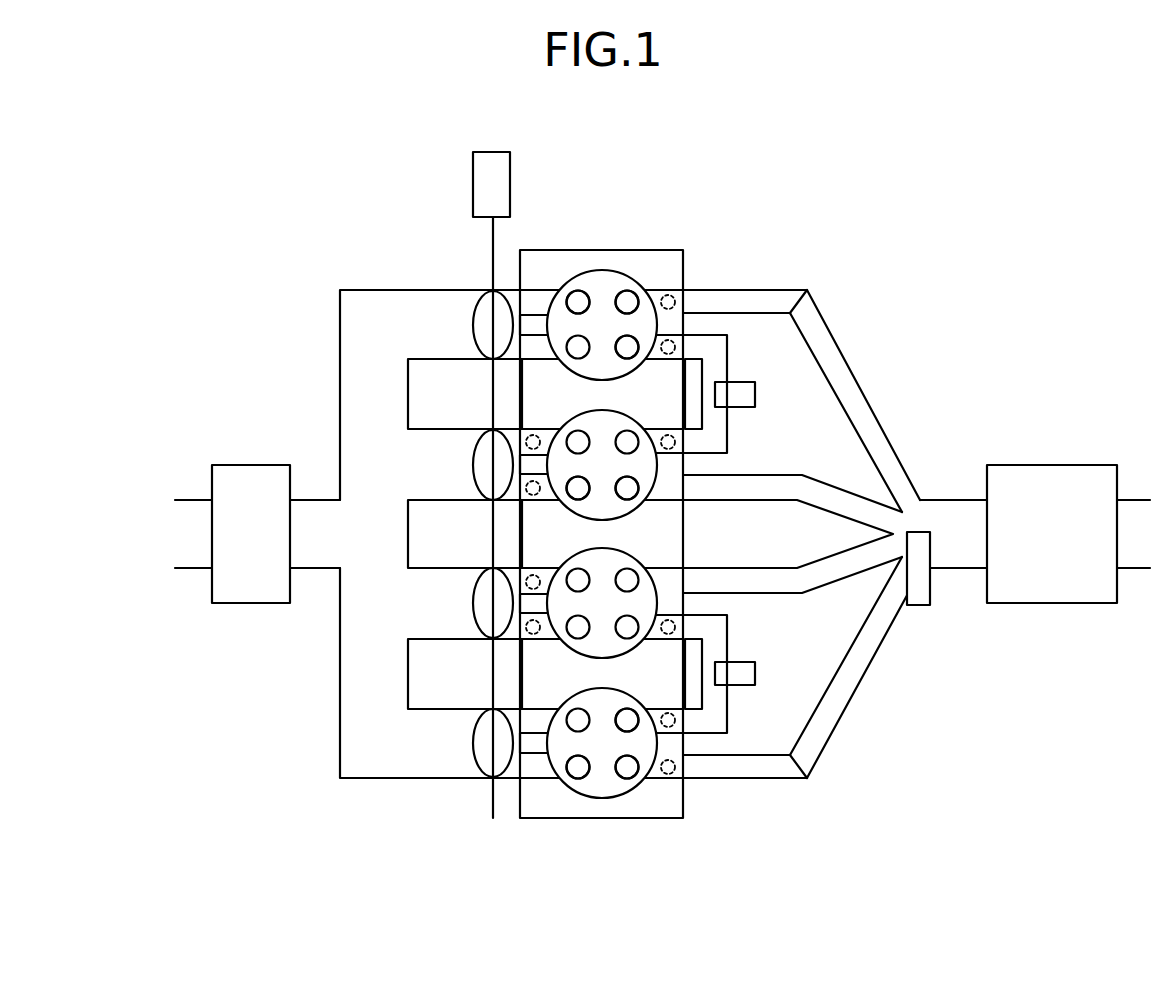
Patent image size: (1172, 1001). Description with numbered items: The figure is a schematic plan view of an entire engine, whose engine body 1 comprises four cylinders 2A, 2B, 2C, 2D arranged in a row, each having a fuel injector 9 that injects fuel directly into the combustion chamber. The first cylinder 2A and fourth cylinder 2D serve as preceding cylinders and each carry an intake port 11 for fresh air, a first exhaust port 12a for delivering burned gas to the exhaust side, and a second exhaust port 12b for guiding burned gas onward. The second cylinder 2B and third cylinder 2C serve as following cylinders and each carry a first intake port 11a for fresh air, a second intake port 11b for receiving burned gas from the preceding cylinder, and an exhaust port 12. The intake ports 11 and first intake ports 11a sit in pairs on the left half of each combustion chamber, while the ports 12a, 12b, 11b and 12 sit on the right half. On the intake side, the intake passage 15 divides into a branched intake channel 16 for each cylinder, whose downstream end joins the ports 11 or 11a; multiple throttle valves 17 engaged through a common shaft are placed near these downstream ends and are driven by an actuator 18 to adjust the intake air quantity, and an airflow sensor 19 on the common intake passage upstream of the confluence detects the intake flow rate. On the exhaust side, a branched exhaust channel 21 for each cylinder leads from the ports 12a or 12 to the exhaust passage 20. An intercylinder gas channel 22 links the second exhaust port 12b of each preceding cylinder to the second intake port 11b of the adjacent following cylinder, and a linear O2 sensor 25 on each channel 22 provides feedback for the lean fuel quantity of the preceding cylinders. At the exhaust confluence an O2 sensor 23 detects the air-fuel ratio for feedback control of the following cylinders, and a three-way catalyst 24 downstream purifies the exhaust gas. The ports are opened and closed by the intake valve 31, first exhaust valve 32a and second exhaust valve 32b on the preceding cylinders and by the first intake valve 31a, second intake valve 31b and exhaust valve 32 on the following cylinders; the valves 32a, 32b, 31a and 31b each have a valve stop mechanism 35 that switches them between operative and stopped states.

The engine body 1 is at (532, 225).
The first cylinder 2A is at (642, 283).
The second cylinder 2B is at (590, 411).
The third cylinder 2C is at (645, 562).
The fourth cylinder 2D is at (640, 790).
The fuel injector 9 is at (520, 332).
The intake port 11 is at (536, 287).
The first intake port 11a is at (545, 428).
The second intake port 11b is at (705, 420).
The exhaust port 12 is at (685, 558).
The first exhaust port 12a is at (675, 290).
The second exhaust port 12b is at (703, 365).
The intake passage 15 is at (184, 498).
The branched intake channel 16 is at (362, 289).
The throttle valve 17 is at (475, 764).
The actuator 18 is at (473, 172).
The airflow sensor 19 is at (230, 604).
The exhaust passage 20 is at (948, 498).
The branched exhaust channel 21 is at (785, 289).
The intercylinder gas channel 22 is at (730, 342).
The O2 sensor 23 is at (917, 606).
The three-way catalyst 24 is at (1047, 604).
The linear O2 sensor 25 is at (755, 389).
The intake valve 31 is at (590, 295).
The first intake valve 31a is at (581, 500).
The second intake valve 31b is at (683, 474).
The exhaust valve 32 is at (627, 500).
The first exhaust valve 32a is at (620, 290).
The second exhaust valve 32b is at (620, 359).
The valve stop mechanism 35 is at (583, 533).